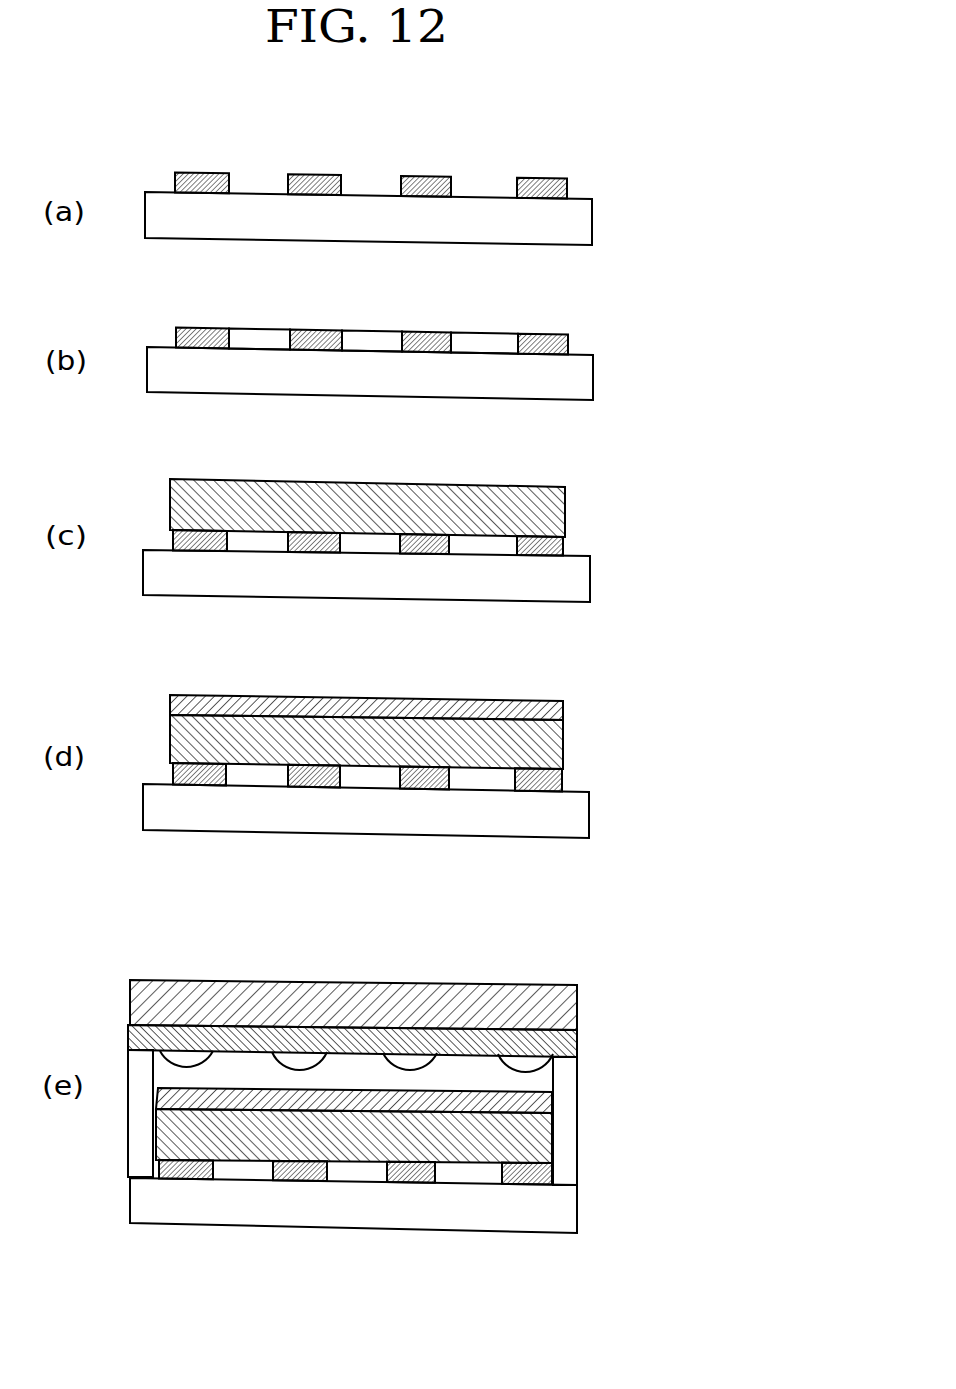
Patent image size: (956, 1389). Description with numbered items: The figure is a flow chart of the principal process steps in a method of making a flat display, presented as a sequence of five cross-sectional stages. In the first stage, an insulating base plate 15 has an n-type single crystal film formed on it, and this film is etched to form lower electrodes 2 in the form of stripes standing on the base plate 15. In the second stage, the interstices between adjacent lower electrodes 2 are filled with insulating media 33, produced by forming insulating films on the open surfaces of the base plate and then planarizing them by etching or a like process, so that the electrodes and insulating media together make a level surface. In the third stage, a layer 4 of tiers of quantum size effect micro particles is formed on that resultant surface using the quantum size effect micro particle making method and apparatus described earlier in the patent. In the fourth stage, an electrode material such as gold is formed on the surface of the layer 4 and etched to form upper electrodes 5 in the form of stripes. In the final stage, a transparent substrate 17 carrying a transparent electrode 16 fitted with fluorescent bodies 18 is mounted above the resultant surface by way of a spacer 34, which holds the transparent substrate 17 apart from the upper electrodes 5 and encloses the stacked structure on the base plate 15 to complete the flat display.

The lower electrode 2 is at (553, 176).
The insulating base plate 15 is at (592, 218).
The insulating medium 33 is at (482, 340).
The layer of tiers of quantum size effect micro particles 4 is at (565, 510).
The upper electrode 5 is at (563, 706).
The transparent electrode 16 is at (567, 1044).
The transparent substrate 17 is at (448, 1002).
The fluorescent body 18 is at (185, 1060).
The spacer 34 is at (138, 1128).